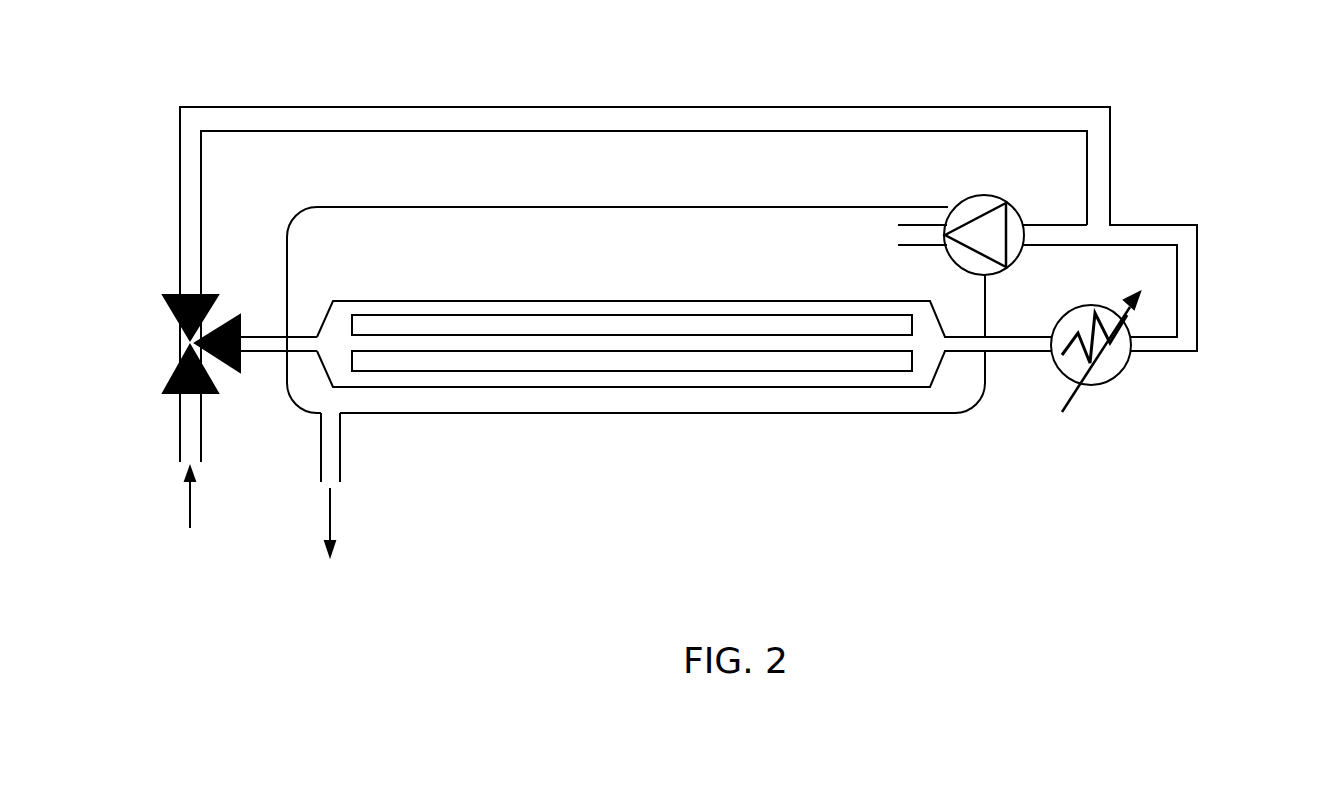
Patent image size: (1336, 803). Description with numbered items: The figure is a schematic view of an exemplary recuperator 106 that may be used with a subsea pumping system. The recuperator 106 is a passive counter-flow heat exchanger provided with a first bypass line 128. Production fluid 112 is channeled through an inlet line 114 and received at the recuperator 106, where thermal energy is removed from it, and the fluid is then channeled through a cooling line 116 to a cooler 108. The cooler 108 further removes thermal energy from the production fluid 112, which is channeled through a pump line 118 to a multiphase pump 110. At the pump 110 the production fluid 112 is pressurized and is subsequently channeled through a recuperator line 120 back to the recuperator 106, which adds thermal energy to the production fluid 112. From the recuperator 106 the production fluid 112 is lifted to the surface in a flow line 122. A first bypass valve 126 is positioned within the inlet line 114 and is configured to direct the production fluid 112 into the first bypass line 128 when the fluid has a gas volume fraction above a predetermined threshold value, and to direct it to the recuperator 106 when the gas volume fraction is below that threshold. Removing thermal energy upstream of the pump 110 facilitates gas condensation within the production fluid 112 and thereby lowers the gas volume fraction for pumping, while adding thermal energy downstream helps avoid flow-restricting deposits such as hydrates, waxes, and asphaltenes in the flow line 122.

The recuperator 106 is at (385, 207).
The cooler 108 is at (1088, 385).
The multiphase pump 110 is at (983, 195).
The production fluid 112 is at (190, 512).
The inlet line 114 is at (180, 426).
The cooling line 116 is at (1013, 353).
The pump line 118 is at (1197, 272).
The recuperator line 120 is at (920, 226).
The flow line 122 is at (340, 445).
The first bypass valve 126 is at (163, 297).
The first bypass line 128 is at (578, 107).